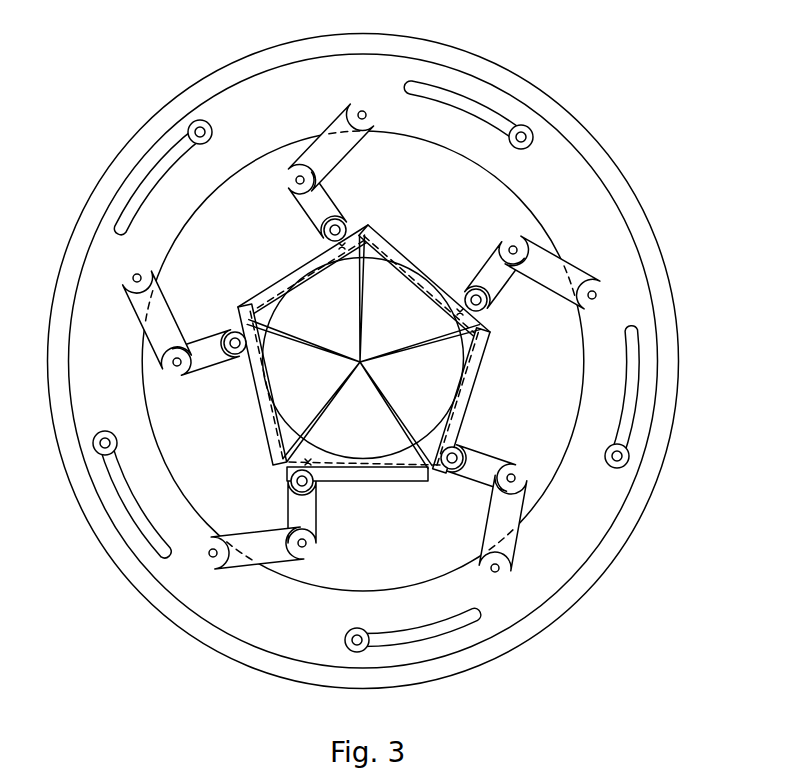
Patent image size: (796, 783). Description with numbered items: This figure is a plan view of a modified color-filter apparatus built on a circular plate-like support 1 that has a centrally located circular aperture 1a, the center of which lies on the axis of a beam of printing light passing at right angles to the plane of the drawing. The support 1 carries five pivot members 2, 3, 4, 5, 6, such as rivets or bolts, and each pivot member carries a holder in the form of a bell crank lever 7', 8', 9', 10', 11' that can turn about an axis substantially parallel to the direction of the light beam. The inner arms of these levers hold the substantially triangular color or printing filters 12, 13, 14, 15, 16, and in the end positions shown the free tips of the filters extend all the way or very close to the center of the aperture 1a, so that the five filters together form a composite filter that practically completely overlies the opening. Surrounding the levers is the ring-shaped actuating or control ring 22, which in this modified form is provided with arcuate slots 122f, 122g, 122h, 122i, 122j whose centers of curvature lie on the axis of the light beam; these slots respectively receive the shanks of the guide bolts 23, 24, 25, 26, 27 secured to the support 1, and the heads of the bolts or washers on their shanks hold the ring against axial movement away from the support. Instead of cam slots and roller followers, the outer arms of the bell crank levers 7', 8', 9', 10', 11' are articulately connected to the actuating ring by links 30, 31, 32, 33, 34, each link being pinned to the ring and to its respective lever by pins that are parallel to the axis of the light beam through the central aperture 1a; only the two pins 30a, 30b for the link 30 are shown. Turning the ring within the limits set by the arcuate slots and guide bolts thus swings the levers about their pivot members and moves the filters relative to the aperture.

The circular plate-like support 1 is at (178, 624).
The central aperture 1a is at (291, 414).
The pivot member 2 is at (496, 318).
The pivot member 3 is at (448, 470).
The pivot member 4 is at (290, 486).
The pivot member 5 is at (232, 330).
The pivot member 6 is at (345, 221).
The bell crank lever 7' is at (503, 283).
The bell crank lever 8' is at (482, 483).
The bell crank lever 9' is at (320, 512).
The bell crank lever 10' is at (206, 333).
The bell crank lever 11' is at (301, 205).
The color filter 12 is at (456, 292).
The color filter 13 is at (458, 428).
The color filter 14 is at (320, 470).
The color filter 15 is at (250, 358).
The color filter 16 is at (330, 245).
The actuating ring 22 is at (508, 100).
The guide bolt 23 is at (620, 468).
The guide bolt 24 is at (350, 645).
The guide bolt 25 is at (93, 443).
The guide bolt 26 is at (197, 121).
The guide bolt 27 is at (546, 134).
The link 30 is at (575, 249).
The pin 30a is at (592, 296).
The pin 30b is at (518, 233).
The link 31 is at (521, 541).
The link 32 is at (240, 560).
The link 33 is at (137, 301).
The link 34 is at (338, 124).
The arcuate slot 122f is at (638, 336).
The arcuate slot 122g is at (449, 634).
The arcuate slot 122h is at (135, 546).
The arcuate slot 122i is at (143, 178).
The arcuate slot 122j is at (455, 90).